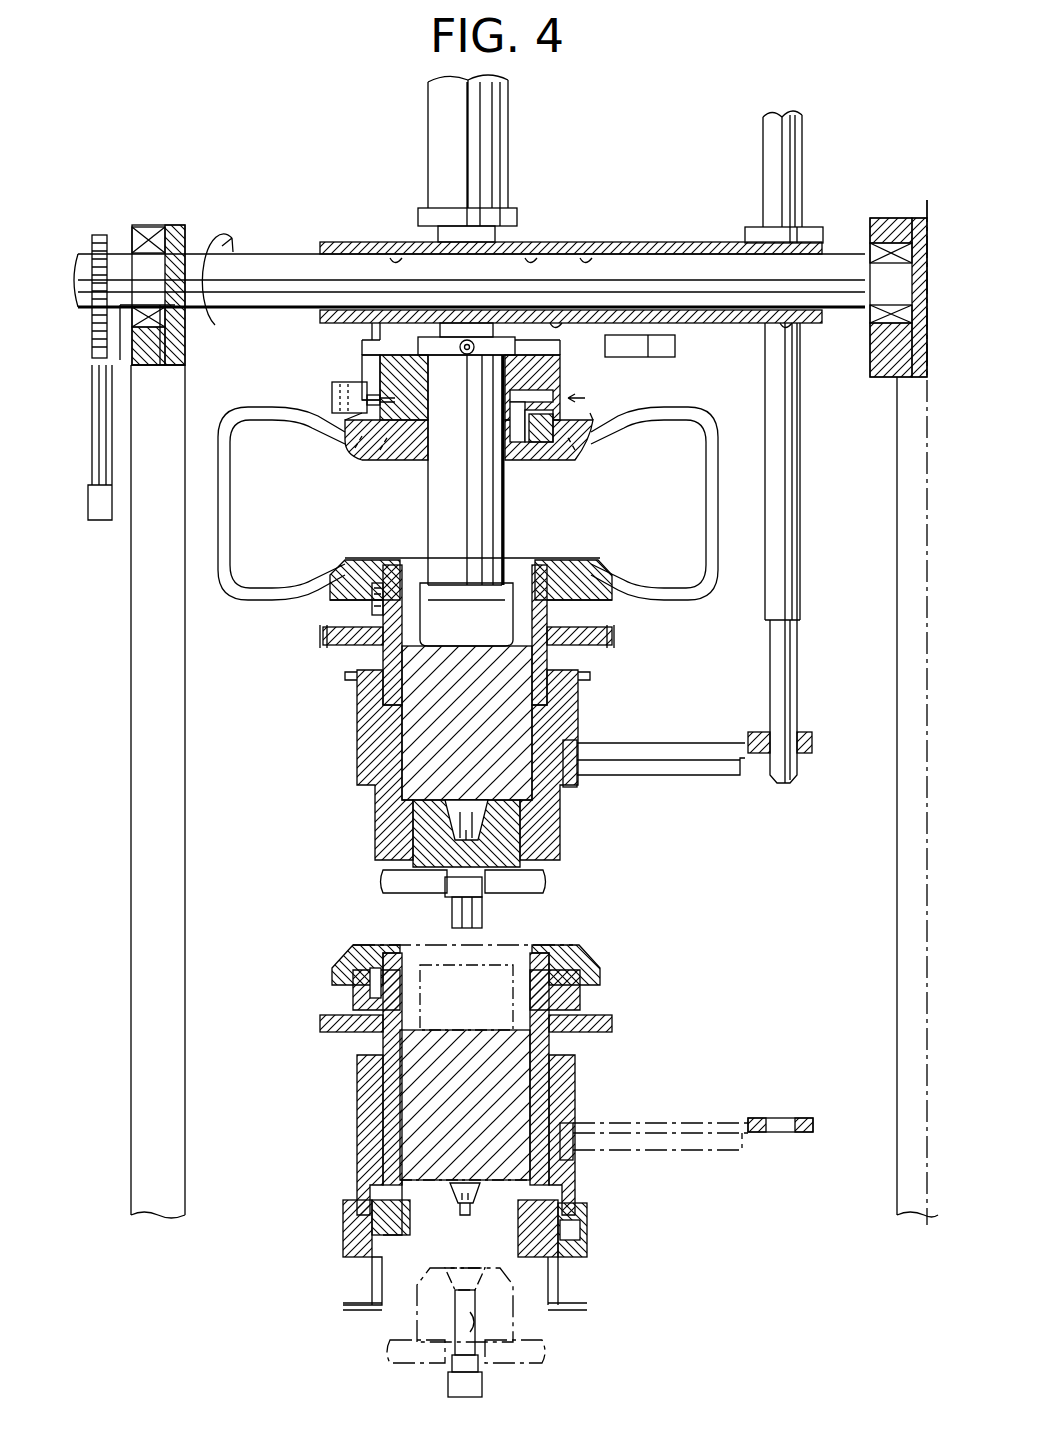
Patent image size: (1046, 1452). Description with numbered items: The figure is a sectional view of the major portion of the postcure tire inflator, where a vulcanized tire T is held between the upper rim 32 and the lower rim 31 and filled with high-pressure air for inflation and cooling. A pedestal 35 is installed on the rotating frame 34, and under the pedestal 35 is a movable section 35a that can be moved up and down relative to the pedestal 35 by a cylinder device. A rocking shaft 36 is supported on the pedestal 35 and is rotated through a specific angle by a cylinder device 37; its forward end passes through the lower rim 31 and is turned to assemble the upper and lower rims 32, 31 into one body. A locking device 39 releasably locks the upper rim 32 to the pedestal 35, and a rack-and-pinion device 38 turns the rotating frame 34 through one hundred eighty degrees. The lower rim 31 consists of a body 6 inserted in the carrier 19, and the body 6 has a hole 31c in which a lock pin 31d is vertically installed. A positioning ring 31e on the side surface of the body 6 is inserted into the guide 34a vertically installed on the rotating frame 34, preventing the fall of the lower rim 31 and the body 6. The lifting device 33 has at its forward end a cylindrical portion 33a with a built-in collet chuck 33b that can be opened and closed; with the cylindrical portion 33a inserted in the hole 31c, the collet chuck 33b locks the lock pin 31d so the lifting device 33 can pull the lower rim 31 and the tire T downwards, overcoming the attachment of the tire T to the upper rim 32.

The rack-and-pinion device 38 is at (97, 233).
The rotating frame 34 is at (346, 242).
The guide 34a is at (803, 566).
The pedestal 35 is at (566, 352).
The movable section 35a is at (392, 382).
The locking device 39 is at (333, 400).
The cylinder device 37 is at (676, 352).
The tire T is at (705, 416).
The upper rim 32 is at (560, 438).
The body 6 is at (520, 1105).
The rocking shaft 36 is at (500, 527).
The lower rim 31 is at (575, 955).
The positioning ring 31e is at (782, 1118).
The carrier 19 is at (352, 1196).
The hole 31c is at (550, 1226).
The lock pin 31d is at (470, 1215).
The cylindrical portion 33a is at (418, 1295).
The collet chuck 33b is at (460, 1322).
The lifting device 33 is at (500, 1375).